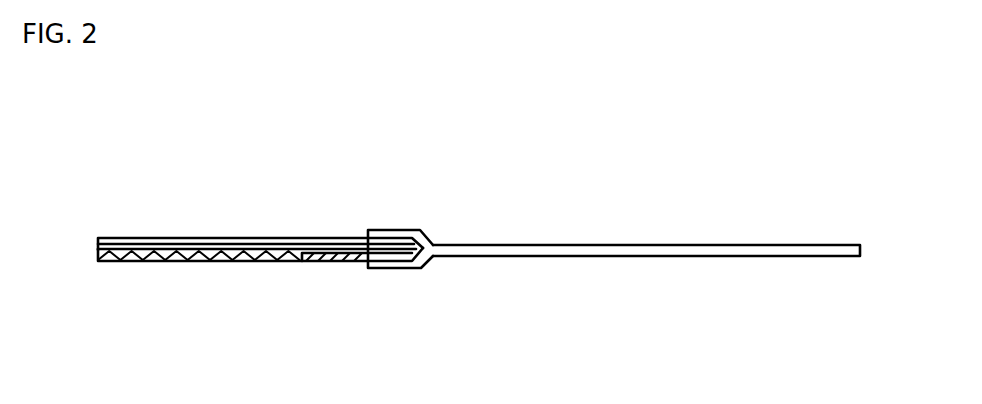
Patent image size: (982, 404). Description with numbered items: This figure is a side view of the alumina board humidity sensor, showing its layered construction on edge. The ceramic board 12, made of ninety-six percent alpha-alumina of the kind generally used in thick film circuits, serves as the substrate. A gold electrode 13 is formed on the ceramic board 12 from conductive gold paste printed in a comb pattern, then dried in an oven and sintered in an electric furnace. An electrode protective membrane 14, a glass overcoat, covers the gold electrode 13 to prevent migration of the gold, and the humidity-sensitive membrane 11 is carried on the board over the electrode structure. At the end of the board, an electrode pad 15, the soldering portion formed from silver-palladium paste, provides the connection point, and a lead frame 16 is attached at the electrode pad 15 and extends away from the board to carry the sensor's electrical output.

The humidity-sensitive membrane 11 is at (107, 262).
The ceramic board 12 is at (114, 238).
The gold electrode 13 is at (226, 261).
The electrode protective membrane 14 is at (310, 261).
The electrode pad 15 is at (390, 262).
The lead frame 16 is at (518, 253).